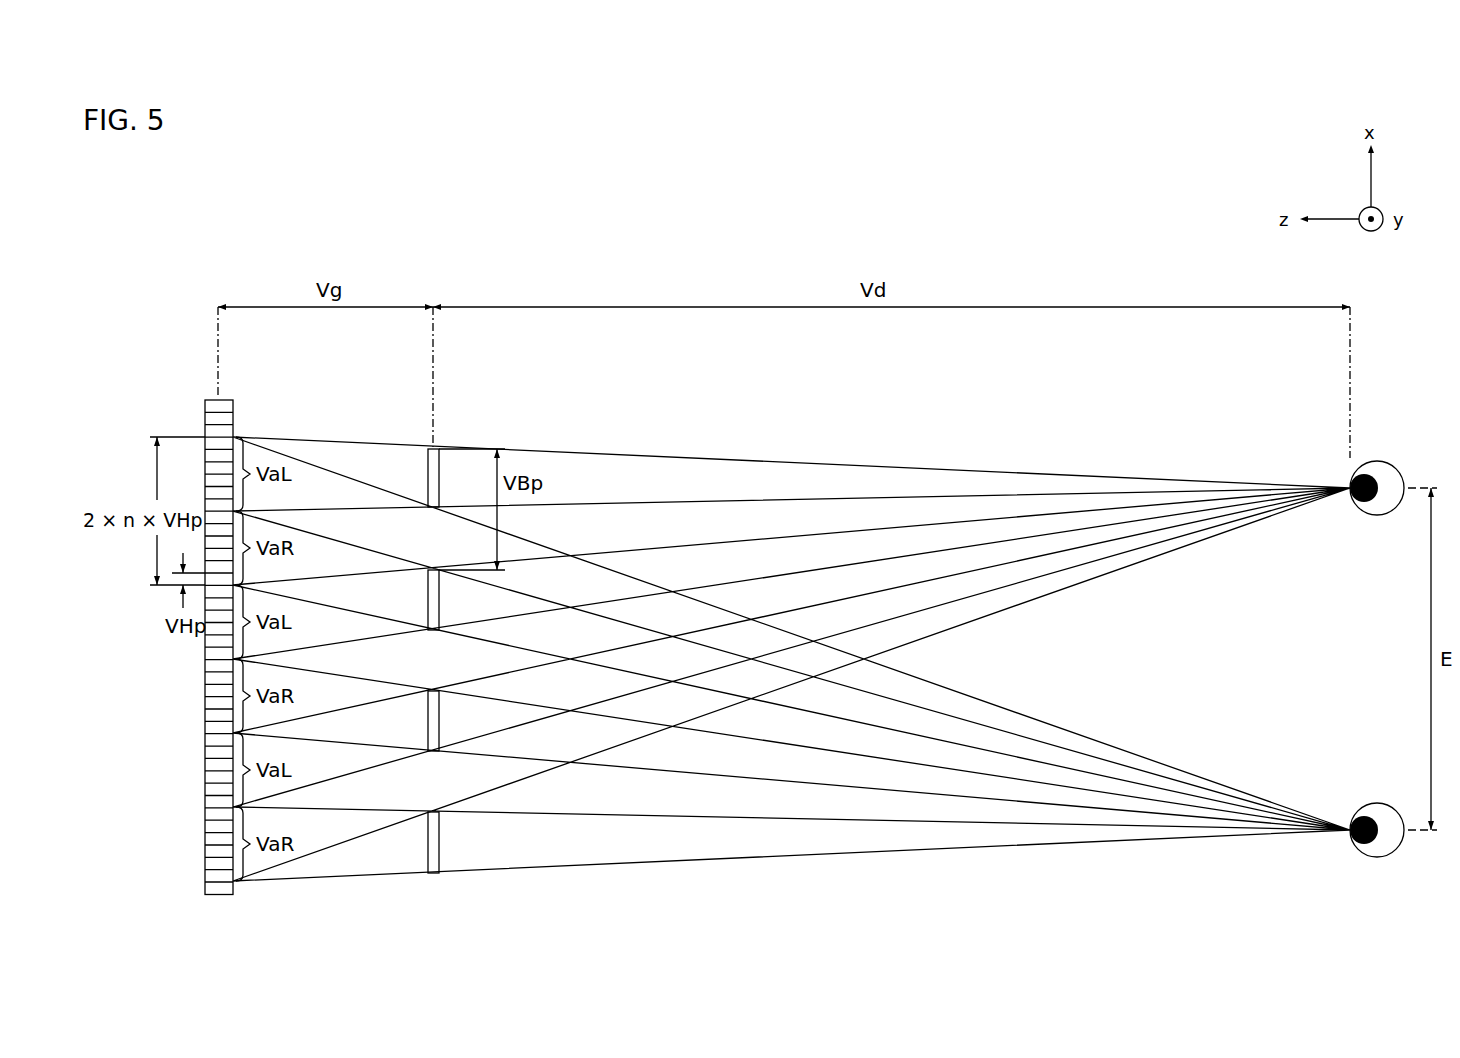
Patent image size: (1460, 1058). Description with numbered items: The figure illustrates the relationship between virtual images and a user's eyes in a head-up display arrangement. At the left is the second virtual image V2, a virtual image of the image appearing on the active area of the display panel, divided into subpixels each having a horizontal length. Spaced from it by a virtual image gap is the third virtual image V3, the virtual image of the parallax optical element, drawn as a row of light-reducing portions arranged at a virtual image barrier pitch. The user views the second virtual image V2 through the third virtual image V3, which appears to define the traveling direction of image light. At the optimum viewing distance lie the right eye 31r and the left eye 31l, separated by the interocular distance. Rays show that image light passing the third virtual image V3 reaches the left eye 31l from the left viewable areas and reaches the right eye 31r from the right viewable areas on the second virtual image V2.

The second virtual image V2 is at (227, 398).
The third virtual image V3 is at (440, 448).
The right eye 31r is at (1391, 464).
The left eye 31l is at (1391, 853).